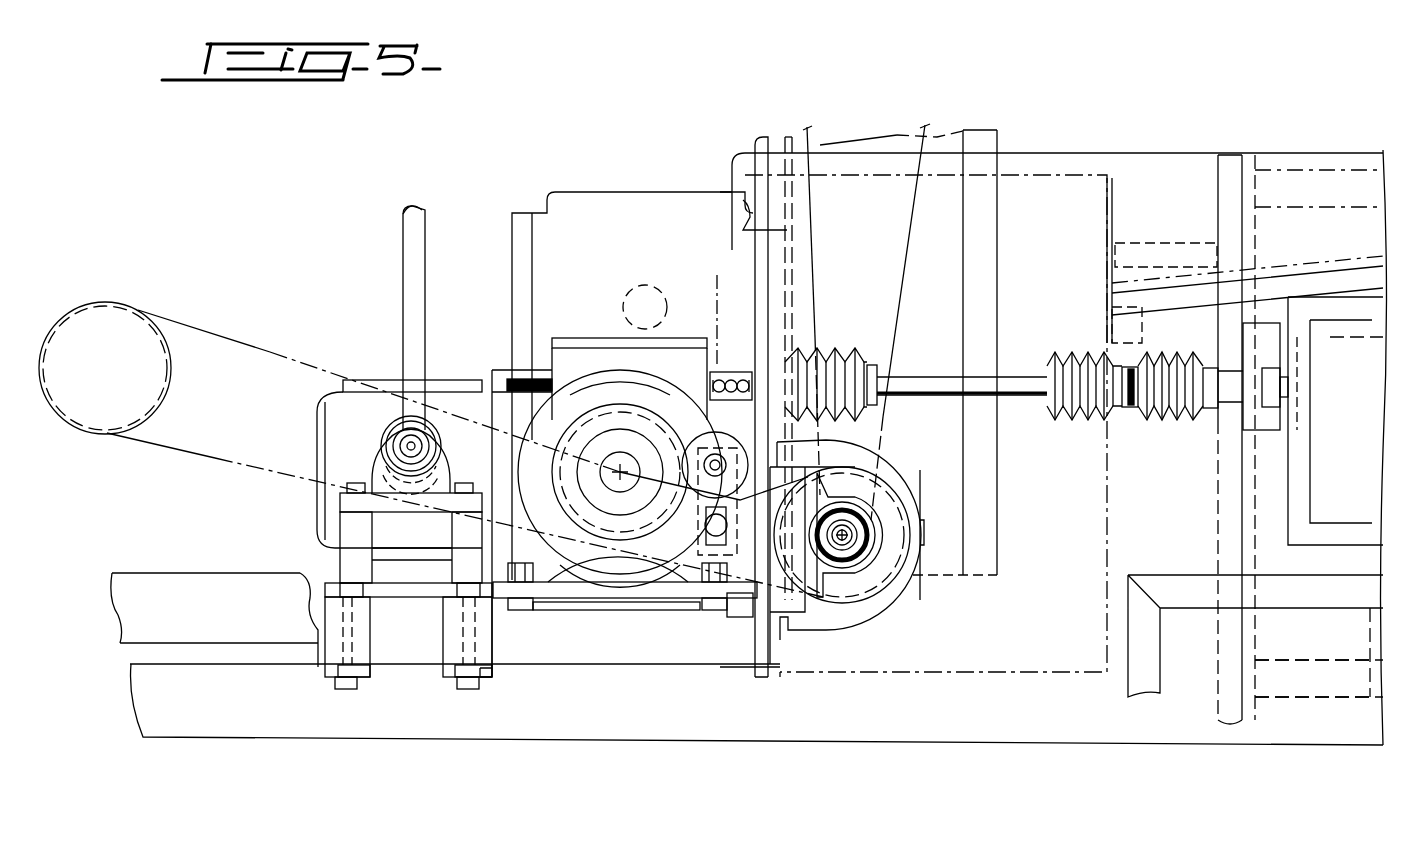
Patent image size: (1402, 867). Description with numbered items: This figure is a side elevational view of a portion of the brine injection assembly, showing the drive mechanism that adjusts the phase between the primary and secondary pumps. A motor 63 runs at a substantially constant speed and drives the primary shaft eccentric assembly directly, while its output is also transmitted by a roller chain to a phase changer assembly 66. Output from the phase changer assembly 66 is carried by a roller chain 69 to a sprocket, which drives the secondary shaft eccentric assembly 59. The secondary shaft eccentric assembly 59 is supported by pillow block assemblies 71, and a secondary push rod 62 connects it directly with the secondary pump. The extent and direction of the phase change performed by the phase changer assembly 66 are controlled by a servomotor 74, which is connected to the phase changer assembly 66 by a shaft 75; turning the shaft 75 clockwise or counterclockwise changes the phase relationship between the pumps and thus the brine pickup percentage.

The secondary shaft eccentric assembly 59 is at (388, 440).
The secondary push rod 62 is at (413, 238).
The motor 63 is at (378, 380).
The phase changer assembly 66 is at (563, 358).
The roller chain 69 is at (562, 432).
The pillow block assemblies 71 is at (345, 497).
The servomotor 74 is at (1357, 405).
The shaft 75 is at (1012, 388).